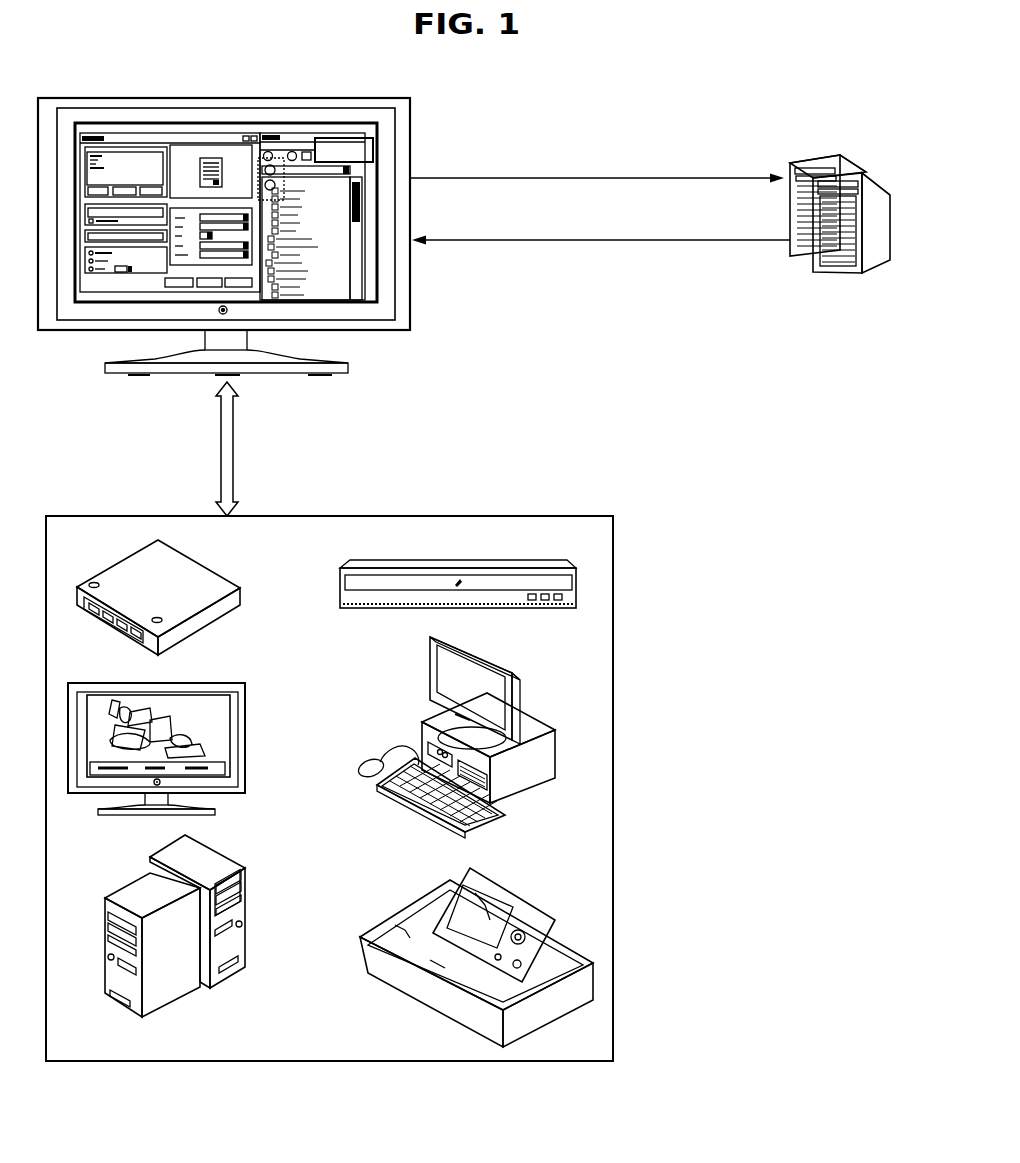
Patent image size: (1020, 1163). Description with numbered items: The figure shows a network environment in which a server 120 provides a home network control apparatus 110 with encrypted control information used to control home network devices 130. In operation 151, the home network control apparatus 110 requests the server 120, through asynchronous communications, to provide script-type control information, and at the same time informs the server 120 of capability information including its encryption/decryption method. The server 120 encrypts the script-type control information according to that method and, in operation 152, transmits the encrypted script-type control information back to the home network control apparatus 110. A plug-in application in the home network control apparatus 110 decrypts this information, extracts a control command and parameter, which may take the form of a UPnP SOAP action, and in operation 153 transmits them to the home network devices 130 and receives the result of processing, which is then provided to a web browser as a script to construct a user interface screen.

The home network control apparatus 110 is at (337, 252).
The server 120 is at (840, 242).
The home network devices 130 is at (329, 810).
The operation of requesting script-type control information 151 is at (597, 154).
The operation of transmitting encrypted script-type control information 152 is at (601, 278).
The operation of UPnP action and response 153 is at (175, 449).